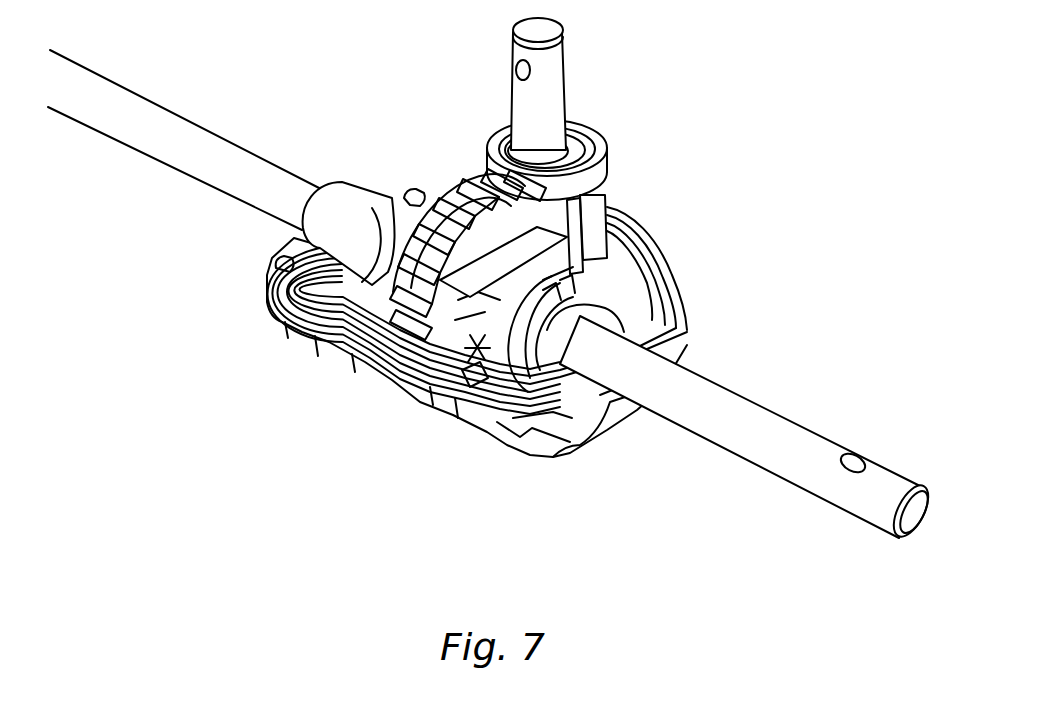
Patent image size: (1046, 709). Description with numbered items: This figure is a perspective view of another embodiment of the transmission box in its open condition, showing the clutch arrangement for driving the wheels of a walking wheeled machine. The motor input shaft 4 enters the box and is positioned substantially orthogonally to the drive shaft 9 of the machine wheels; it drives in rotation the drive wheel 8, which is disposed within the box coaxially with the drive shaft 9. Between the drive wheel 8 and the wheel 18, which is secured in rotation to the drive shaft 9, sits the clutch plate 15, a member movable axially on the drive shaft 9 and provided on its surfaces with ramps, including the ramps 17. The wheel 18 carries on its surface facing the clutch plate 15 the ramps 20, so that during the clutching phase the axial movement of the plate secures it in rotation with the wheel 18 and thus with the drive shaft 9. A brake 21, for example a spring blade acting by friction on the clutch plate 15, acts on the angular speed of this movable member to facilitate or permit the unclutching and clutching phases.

The motor input shaft 4 is at (527, 114).
The drive wheel 8 is at (343, 360).
The drive shaft 9 is at (690, 385).
The clutch plate 15 is at (403, 390).
The ramps 17 is at (437, 395).
The wheel 18 is at (577, 262).
The ramps 20 is at (442, 430).
The brake 21 is at (413, 197).